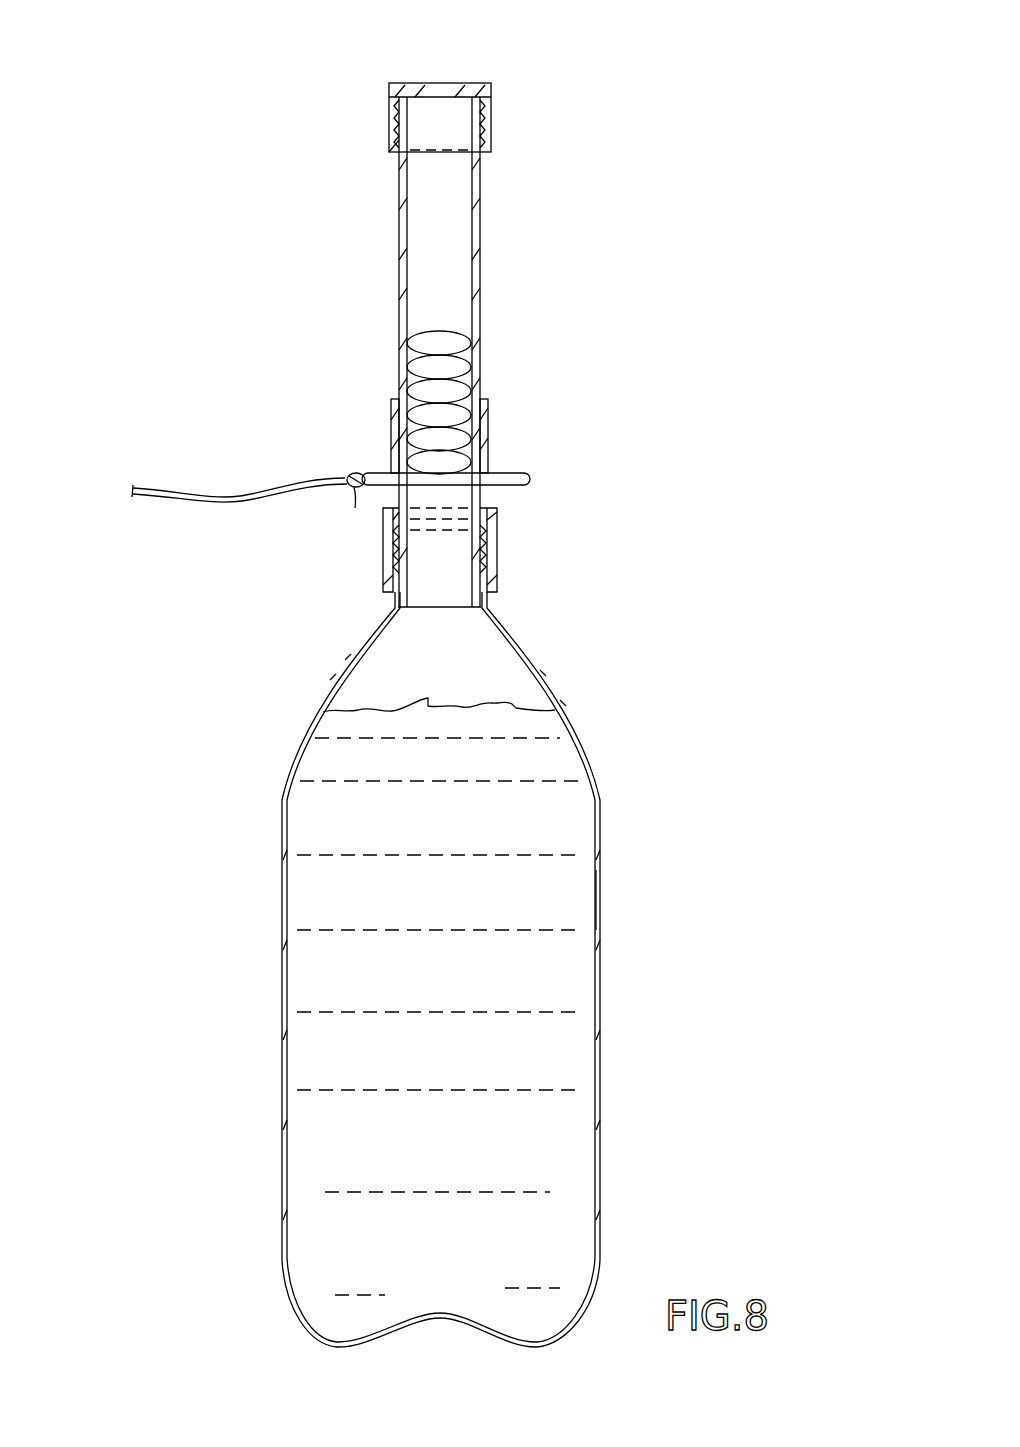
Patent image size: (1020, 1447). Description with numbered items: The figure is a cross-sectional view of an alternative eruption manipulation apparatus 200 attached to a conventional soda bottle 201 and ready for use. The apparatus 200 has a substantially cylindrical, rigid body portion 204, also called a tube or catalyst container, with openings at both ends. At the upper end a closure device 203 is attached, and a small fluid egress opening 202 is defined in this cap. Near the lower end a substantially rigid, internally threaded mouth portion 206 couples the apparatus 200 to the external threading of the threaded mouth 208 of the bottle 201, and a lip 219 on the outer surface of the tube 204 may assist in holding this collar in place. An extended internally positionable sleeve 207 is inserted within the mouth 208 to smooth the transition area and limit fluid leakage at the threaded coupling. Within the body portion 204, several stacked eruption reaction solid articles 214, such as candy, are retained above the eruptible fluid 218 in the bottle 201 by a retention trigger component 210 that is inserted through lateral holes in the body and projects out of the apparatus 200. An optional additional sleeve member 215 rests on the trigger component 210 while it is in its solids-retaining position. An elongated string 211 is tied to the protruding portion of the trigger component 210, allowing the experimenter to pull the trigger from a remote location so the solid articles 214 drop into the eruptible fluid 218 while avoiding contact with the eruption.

The eruption manipulation apparatus 200 is at (268, 230).
The soda bottle 201 is at (598, 808).
The fluid egress opening 202 is at (440, 90).
The closure device 203 is at (492, 105).
The body portion 204 is at (482, 222).
The mouth portion 206 is at (495, 512).
The internally positionable sleeve 207 is at (410, 594).
The threaded mouth 208 is at (412, 566).
The retention trigger component 210 is at (510, 473).
The elongated string 211 is at (153, 487).
The eruption reaction solid articles 214 is at (455, 343).
The sleeve member 215 is at (490, 413).
The eruptible fluid 218 is at (553, 905).
The lip 219 is at (497, 523).